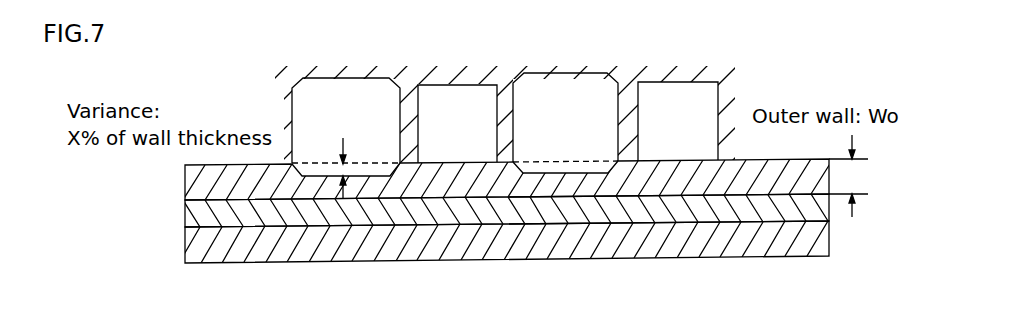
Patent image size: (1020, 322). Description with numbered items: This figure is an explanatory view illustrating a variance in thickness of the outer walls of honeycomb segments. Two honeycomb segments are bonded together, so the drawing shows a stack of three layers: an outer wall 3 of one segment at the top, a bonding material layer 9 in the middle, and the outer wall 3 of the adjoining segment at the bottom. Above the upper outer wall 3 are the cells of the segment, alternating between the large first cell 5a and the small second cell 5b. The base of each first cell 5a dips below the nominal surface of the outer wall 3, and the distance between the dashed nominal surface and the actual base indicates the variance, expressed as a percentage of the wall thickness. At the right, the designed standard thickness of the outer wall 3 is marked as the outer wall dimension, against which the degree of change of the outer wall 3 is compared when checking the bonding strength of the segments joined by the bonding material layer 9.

The first cell 5a is at (332, 82).
The second cell 5b is at (443, 92).
The outer wall 3 is at (687, 245).
The bonding material layer 9 is at (728, 212).